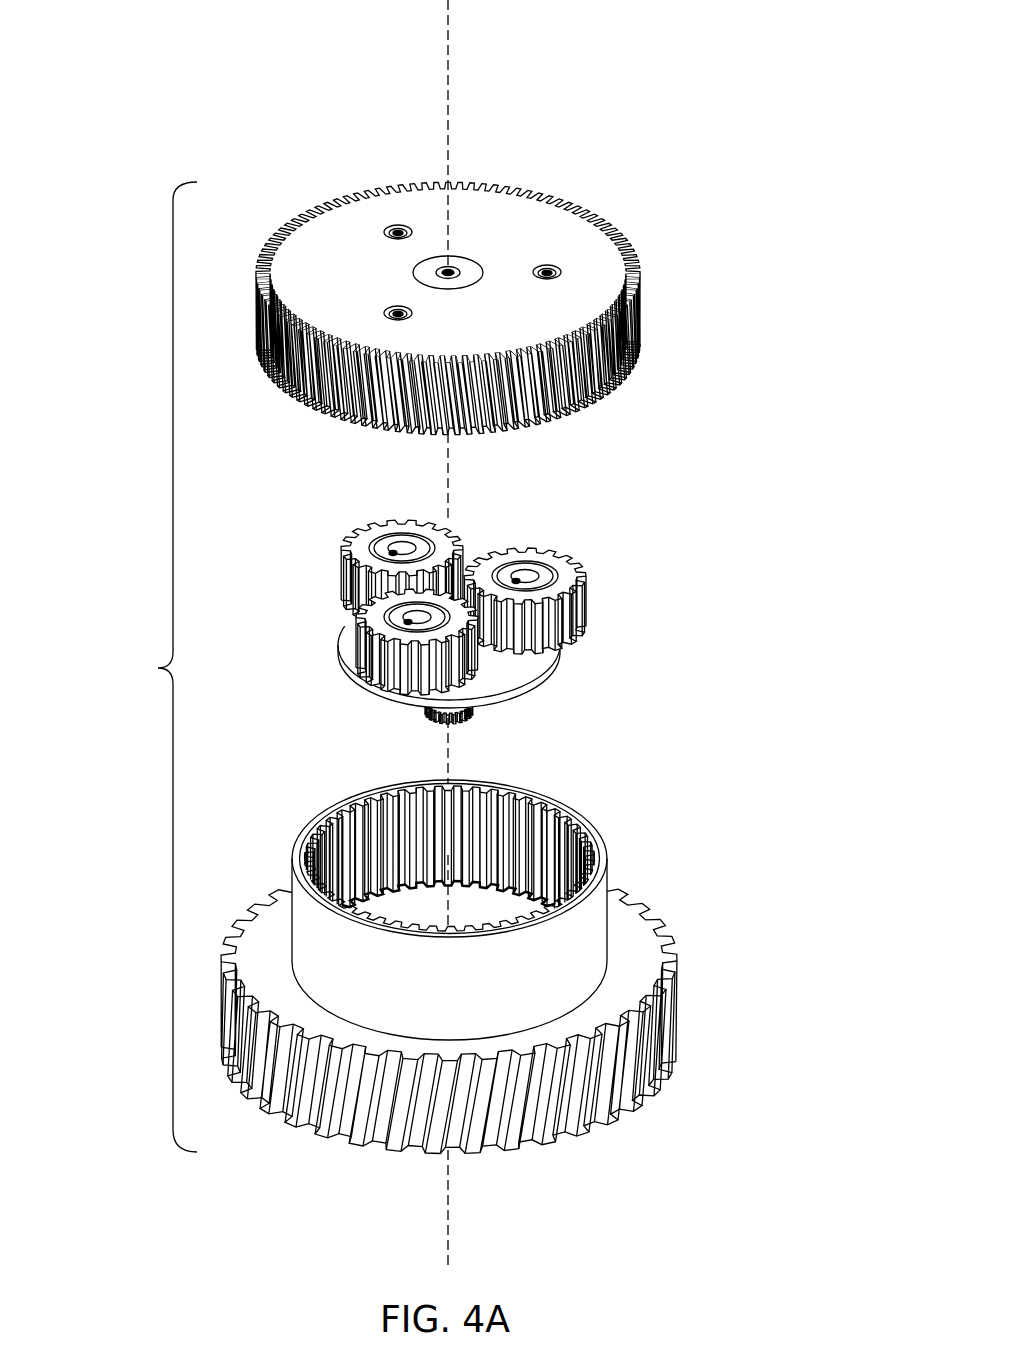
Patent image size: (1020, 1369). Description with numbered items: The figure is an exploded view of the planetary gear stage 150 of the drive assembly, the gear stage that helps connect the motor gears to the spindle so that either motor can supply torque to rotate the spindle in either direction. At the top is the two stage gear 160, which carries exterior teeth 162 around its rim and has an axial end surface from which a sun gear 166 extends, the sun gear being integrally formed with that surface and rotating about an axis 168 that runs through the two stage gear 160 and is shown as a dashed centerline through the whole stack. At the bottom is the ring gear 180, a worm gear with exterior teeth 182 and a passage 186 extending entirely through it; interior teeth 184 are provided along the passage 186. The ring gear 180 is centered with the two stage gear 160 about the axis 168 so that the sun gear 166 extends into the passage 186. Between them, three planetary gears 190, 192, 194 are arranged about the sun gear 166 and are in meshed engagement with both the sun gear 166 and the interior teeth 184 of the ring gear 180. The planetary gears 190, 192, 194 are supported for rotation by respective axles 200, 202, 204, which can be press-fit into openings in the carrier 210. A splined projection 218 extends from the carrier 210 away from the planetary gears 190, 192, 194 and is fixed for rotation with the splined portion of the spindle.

The planetary gear stage 150 is at (148, 667).
The two stage gear 160 is at (497, 297).
The exterior teeth 162 is at (630, 357).
The sun gear 166 is at (512, 224).
The axis 168 is at (450, 85).
The ring gear 180 is at (497, 960).
The exterior teeth 182 is at (675, 1003).
The interior teeth 184 is at (583, 837).
The passage 186 is at (489, 867).
The planetary gear 190 is at (371, 633).
The planetary gear 192 is at (417, 560).
The planetary gear 194 is at (564, 585).
The axle 200 is at (370, 592).
The axle 202 is at (385, 547).
The axle 204 is at (527, 573).
The carrier 210 is at (537, 708).
The splined projection 218 is at (453, 718).